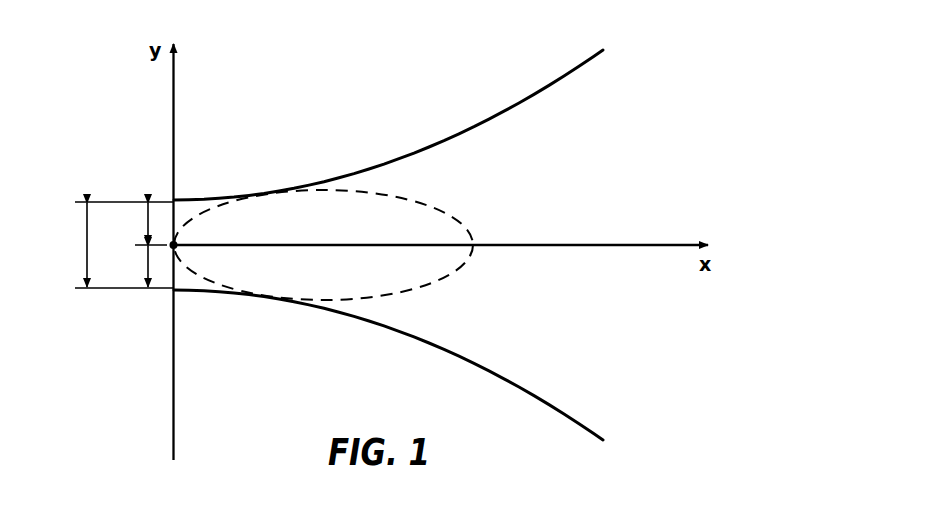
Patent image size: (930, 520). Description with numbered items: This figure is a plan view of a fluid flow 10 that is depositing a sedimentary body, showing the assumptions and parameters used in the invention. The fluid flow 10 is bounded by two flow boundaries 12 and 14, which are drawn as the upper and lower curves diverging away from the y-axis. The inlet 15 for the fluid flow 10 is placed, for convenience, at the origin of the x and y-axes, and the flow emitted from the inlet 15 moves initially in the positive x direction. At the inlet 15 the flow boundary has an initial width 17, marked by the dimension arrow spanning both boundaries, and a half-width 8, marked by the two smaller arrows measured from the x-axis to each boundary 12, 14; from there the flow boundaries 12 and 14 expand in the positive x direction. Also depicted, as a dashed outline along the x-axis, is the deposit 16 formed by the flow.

The half-width 8 is at (146, 224).
The fluid flow 10 is at (329, 247).
The flow boundary 12 is at (443, 143).
The flow boundary 14 is at (425, 340).
The inlet 15 is at (172, 242).
The deposit 16 is at (428, 202).
The initial width 17 is at (83, 240).